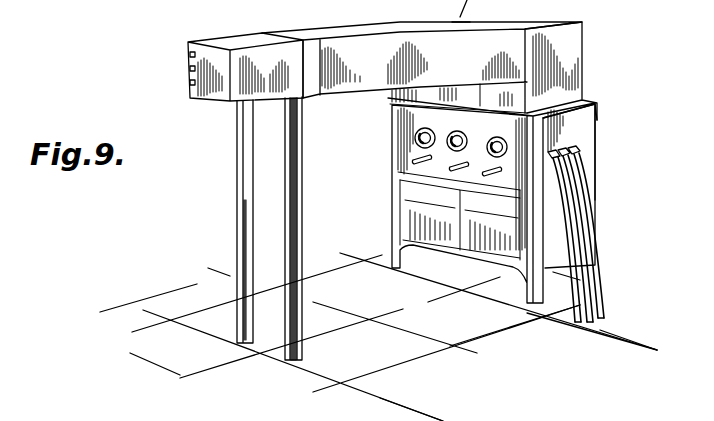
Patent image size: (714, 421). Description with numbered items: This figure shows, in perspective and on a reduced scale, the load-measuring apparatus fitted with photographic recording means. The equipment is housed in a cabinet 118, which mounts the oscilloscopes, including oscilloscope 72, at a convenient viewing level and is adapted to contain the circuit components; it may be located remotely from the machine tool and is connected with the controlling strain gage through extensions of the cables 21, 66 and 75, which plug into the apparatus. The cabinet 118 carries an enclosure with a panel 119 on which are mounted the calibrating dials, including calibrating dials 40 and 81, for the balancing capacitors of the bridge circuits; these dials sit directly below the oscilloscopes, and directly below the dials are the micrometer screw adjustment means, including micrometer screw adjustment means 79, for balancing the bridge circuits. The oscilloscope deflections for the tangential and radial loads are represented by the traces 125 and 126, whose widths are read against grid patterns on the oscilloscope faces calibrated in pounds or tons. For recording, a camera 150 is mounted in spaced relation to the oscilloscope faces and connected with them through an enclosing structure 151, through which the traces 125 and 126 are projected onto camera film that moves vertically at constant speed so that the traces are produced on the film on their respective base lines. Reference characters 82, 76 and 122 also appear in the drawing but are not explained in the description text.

The camera 150 is at (240, 45).
The enclosing structure 151 is at (352, 37).
The cable 75 is at (493, 20).
The top cover element 82 is at (540, 22).
The panel 119 is at (393, 113).
The calibrating dial 81 is at (415, 141).
The micrometer screw adjustment means 79 is at (413, 160).
The cabinet 118 is at (582, 127).
The calibrating dial 40 is at (507, 145).
The cable 21 is at (584, 197).
The cable 66 is at (590, 224).
The cable ends 76 is at (575, 320).
The floor line 122 is at (444, 409).
The trace 126 is at (592, 367).
The oscilloscope 72 is at (550, 363).
The trace 125 is at (653, 375).